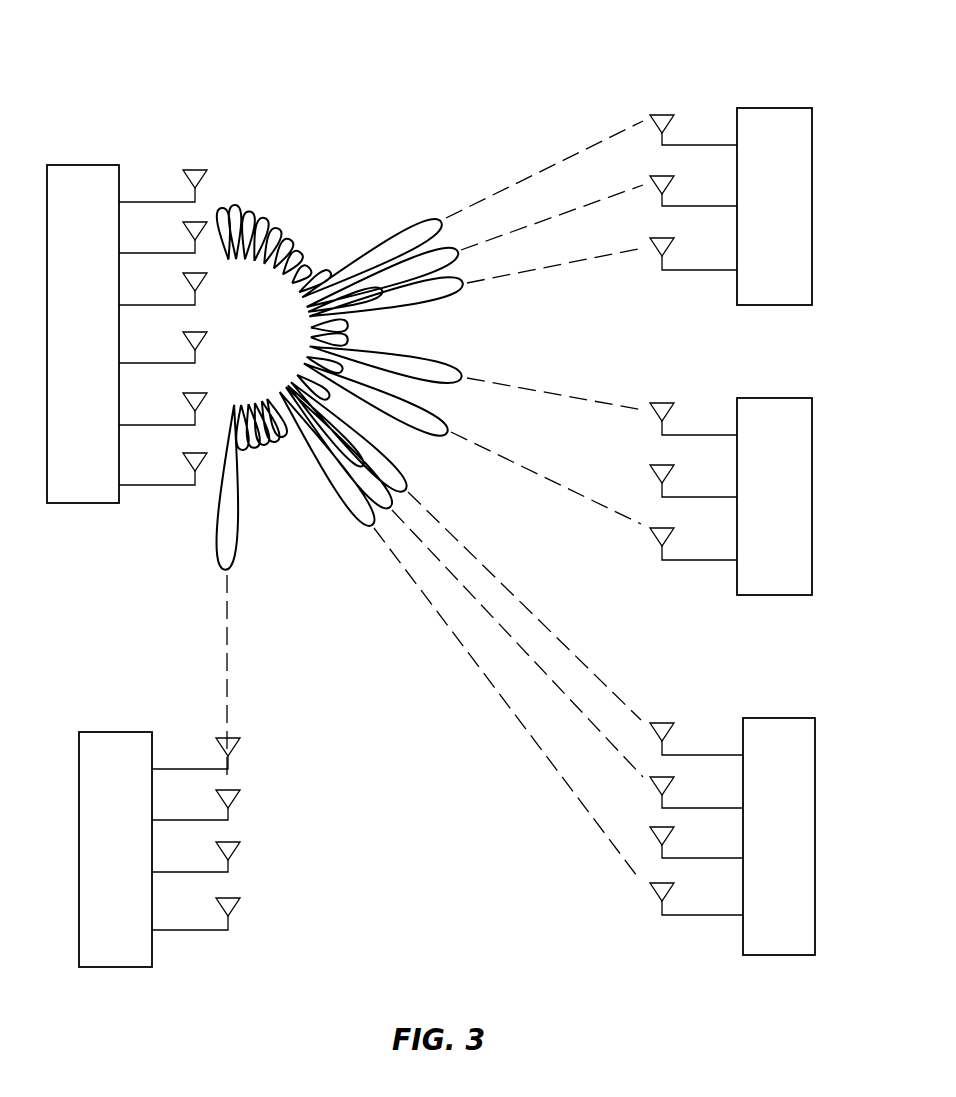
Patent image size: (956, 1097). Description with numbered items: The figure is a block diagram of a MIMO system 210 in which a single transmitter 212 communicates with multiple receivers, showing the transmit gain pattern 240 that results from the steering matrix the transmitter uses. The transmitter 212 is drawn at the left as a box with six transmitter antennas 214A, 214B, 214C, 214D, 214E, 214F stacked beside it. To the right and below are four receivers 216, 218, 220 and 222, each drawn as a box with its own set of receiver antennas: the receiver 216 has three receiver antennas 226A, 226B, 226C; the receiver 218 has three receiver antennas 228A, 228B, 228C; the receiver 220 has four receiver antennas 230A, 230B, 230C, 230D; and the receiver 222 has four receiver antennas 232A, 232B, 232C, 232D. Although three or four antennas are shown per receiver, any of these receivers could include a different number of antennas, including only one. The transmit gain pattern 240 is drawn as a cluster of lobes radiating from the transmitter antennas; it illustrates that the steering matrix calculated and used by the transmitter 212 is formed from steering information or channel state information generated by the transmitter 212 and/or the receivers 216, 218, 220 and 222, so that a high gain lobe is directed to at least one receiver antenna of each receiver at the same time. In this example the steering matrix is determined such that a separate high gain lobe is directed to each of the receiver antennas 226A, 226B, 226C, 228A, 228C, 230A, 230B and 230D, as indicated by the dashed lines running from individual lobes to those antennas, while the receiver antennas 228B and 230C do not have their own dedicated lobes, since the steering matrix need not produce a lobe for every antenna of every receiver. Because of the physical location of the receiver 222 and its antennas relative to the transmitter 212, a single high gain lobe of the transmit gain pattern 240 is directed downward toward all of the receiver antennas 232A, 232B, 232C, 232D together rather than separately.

The MIMO system 210 is at (430, 483).
The transmitter 212 is at (101, 165).
The transmitter antenna 214A is at (183, 173).
The transmitter antenna 214B is at (183, 225).
The transmitter antenna 214C is at (183, 276).
The transmitter antenna 214D is at (183, 335).
The transmitter antenna 214E is at (183, 396).
The transmitter antenna 214F is at (183, 456).
The receiver 216 is at (760, 108).
The receiver 218 is at (760, 398).
The receiver 220 is at (763, 718).
The receiver 222 is at (133, 732).
The receiver antenna 226A is at (675, 118).
The receiver antenna 226B is at (675, 179).
The receiver antenna 226C is at (675, 241).
The receiver antenna 228A is at (675, 406).
The receiver antenna 228B is at (675, 468).
The receiver antenna 228C is at (675, 531).
The receiver antenna 230A is at (675, 726).
The receiver antenna 230B is at (675, 780).
The receiver antenna 230C is at (675, 830).
The receiver antenna 230D is at (675, 886).
The receiver antenna 232A is at (216, 741).
The receiver antenna 232B is at (216, 793).
The receiver antenna 232C is at (216, 845).
The receiver antenna 232D is at (216, 901).
The transmit gain pattern 240 is at (284, 213).